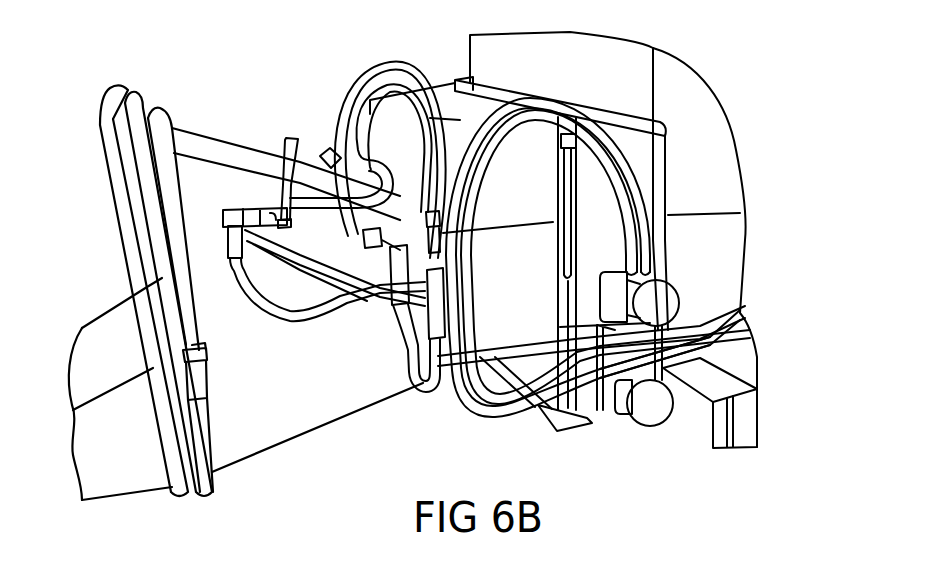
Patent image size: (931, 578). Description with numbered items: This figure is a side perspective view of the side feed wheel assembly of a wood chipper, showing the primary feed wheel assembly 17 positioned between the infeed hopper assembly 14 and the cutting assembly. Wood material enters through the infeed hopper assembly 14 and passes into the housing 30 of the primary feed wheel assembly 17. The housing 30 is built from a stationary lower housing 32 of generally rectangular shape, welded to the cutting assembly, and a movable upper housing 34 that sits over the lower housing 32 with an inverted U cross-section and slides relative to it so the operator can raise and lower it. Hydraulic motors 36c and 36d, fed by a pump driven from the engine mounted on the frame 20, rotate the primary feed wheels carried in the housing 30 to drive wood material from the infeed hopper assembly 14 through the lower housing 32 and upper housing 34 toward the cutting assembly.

The infeed hopper assembly 14 is at (285, 412).
The primary feed wheel assembly 17 is at (607, 409).
The frame 20 is at (703, 433).
The housing 30 is at (656, 163).
The lower housing 32 is at (740, 330).
The upper housing 34 is at (648, 138).
The hydraulic motor 36c is at (650, 420).
The hydraulic motor 36d is at (660, 302).